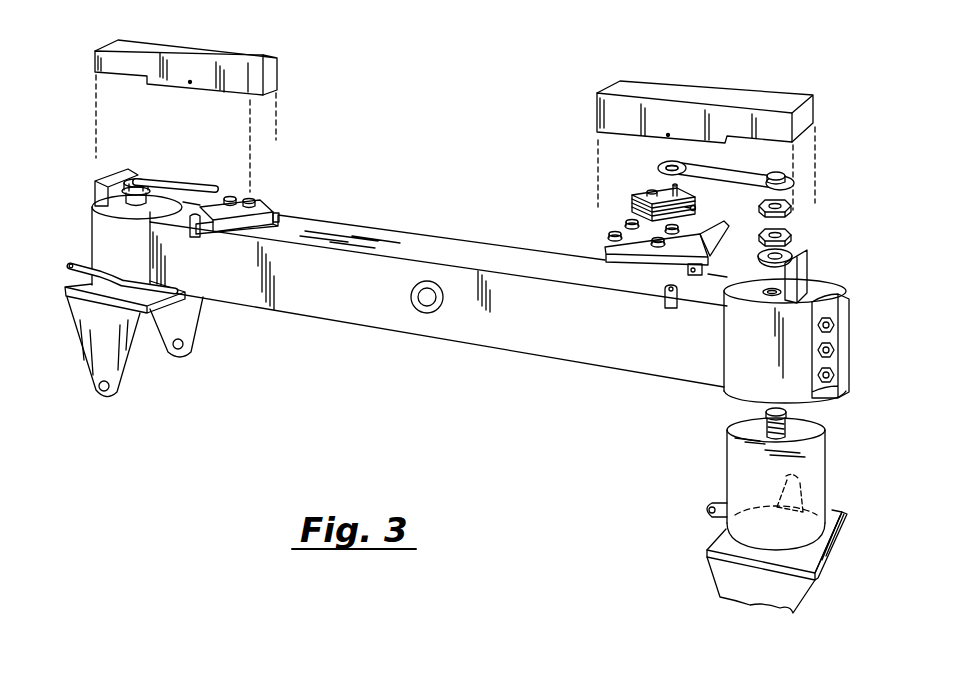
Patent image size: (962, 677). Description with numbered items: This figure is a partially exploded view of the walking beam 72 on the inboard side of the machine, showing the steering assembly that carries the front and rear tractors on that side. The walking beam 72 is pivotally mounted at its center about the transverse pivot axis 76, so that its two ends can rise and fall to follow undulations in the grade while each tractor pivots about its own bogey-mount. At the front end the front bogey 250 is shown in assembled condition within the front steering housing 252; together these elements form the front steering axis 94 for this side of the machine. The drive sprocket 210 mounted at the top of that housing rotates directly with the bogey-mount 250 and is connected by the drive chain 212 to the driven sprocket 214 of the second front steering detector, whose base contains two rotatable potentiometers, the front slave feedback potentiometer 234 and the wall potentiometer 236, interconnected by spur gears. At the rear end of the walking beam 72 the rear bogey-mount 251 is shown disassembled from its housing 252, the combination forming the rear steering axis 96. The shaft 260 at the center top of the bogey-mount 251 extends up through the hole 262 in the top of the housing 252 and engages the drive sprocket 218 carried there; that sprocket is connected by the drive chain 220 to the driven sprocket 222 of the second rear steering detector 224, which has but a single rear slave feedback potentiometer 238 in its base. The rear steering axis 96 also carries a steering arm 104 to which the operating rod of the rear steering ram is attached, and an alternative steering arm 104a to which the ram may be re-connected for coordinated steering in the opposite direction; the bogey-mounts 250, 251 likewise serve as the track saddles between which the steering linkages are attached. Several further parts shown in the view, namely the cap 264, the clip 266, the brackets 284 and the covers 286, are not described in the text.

The walking beam 72 is at (440, 344).
The transverse pivot axis 76 is at (410, 297).
The front steering axis 94 is at (110, 237).
The rear steering axis 96 is at (742, 404).
The steering arm 104 is at (795, 487).
The steering arm 104a is at (717, 516).
The drive sprocket 210 is at (140, 178).
The drive chain 212 is at (180, 186).
The driven sprocket 214 is at (210, 186).
The drive sprocket 218 is at (788, 169).
The drive chain 220 is at (726, 163).
The driven sprocket 222 is at (656, 166).
The second rear steering detector 224 is at (600, 246).
The front slave feedback potentiometer 234 is at (231, 197).
The wall potentiometer 236 is at (250, 200).
The rear slave feedback potentiometer 238 is at (634, 196).
The front bogey 250 is at (196, 342).
The rear bogey-mount 251 is at (835, 515).
The steering housing 252 is at (90, 252).
The shaft 260 is at (790, 432).
The hole 262 is at (765, 288).
The cap 264 is at (788, 417).
The clip 266 is at (664, 294).
The bracket 284 is at (134, 172).
The cover 286 is at (172, 47).